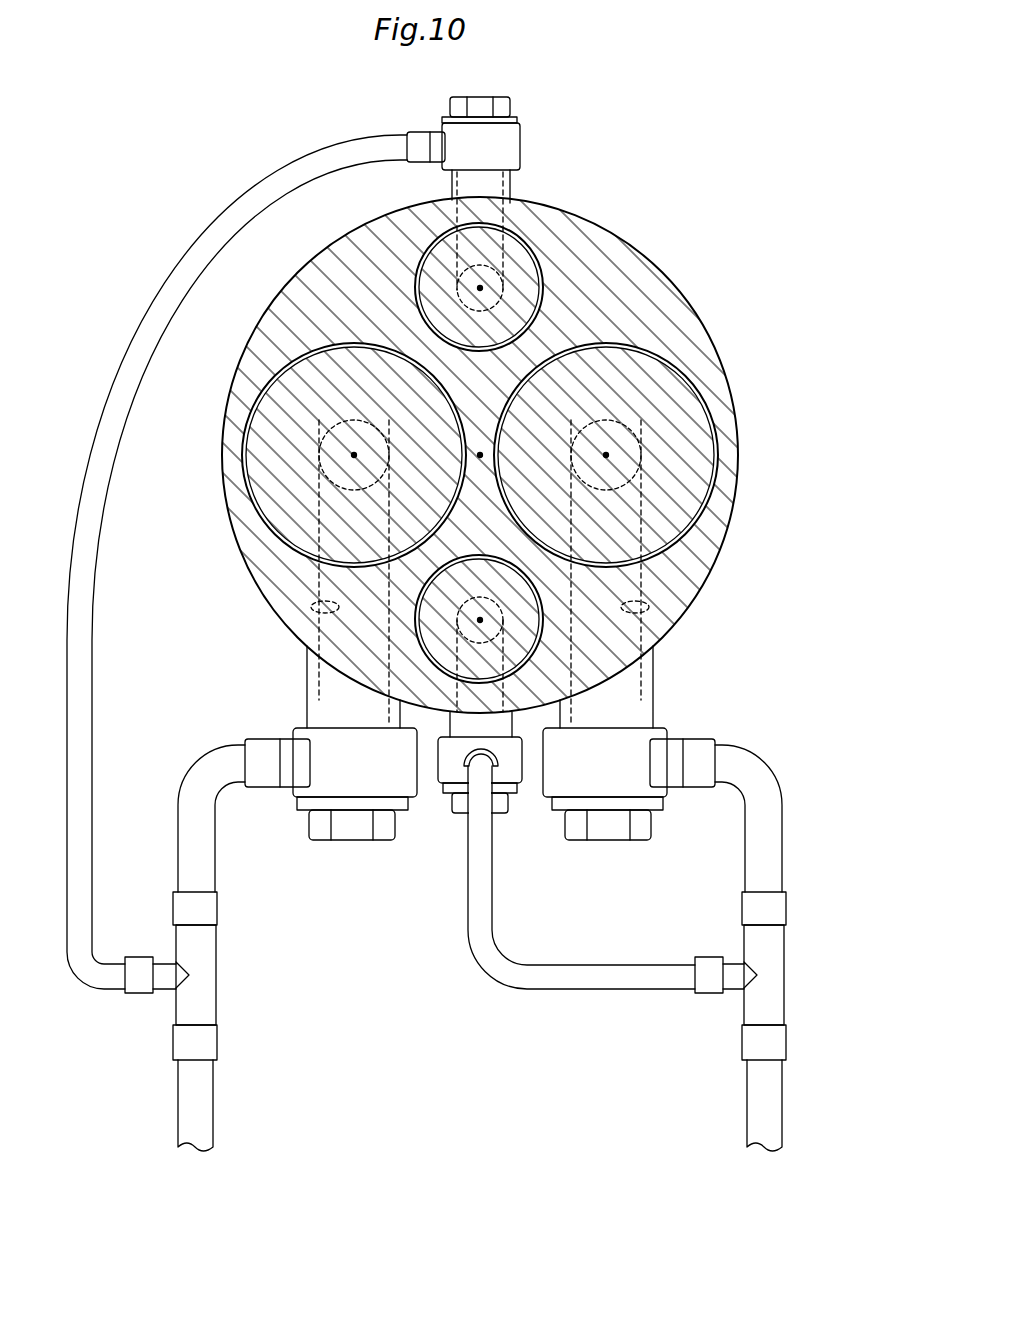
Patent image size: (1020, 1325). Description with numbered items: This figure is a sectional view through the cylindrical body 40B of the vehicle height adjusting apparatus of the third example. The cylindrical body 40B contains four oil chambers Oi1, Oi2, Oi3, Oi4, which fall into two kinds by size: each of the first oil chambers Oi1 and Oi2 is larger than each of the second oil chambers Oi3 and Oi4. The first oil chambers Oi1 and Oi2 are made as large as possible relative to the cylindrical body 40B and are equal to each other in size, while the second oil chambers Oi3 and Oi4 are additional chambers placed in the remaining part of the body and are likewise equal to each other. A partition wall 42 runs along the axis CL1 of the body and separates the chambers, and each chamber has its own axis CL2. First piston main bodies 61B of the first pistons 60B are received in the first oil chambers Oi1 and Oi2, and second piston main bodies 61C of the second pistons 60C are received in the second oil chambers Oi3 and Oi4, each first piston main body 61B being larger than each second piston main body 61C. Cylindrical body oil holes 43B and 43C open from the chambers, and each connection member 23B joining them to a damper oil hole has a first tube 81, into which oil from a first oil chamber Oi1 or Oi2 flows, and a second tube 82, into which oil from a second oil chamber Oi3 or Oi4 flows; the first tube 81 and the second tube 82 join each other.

The cylindrical body 40B is at (689, 262).
The partition wall 42 is at (434, 341).
The cylindrical body oil hole 43B is at (318, 607).
The cylindrical body oil hole 43C is at (493, 210).
The first piston 60B is at (272, 378).
The first piston main body 61B is at (278, 448).
The second piston 60C is at (432, 248).
The second piston main body 61C is at (520, 245).
The first oil chamber Oi1 is at (389, 415).
The first oil chamber Oi2 is at (539, 415).
The second oil chamber Oi3 is at (459, 343).
The second oil chamber Oi4 is at (459, 593).
The axis CL1 is at (480, 459).
The axis CL2 is at (485, 290).
The first tube 81 is at (216, 862).
The second tube 82 is at (92, 862).
The connection member 23B is at (214, 1105).